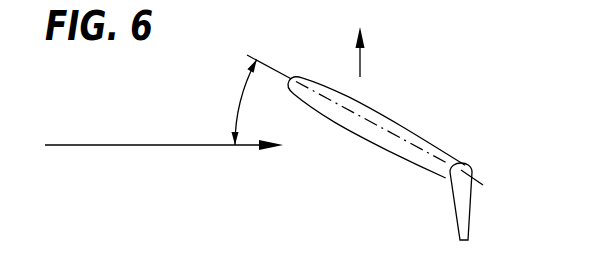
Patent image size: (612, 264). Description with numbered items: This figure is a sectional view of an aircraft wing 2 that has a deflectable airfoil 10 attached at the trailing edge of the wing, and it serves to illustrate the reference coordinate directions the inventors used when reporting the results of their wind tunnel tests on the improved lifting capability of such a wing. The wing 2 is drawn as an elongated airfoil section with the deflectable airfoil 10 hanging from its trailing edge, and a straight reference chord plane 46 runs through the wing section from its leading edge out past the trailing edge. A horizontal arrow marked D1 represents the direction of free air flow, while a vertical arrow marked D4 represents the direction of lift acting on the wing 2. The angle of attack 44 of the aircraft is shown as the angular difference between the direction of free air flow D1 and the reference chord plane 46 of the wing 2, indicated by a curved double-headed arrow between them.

The aircraft wing 2 is at (424, 122).
The deflectable airfoil 10 is at (486, 209).
The angle of attack 44 is at (240, 100).
The reference chord plane 46 is at (278, 69).
The direction of free air flow D1 is at (102, 145).
The direction of lift D4 is at (362, 60).